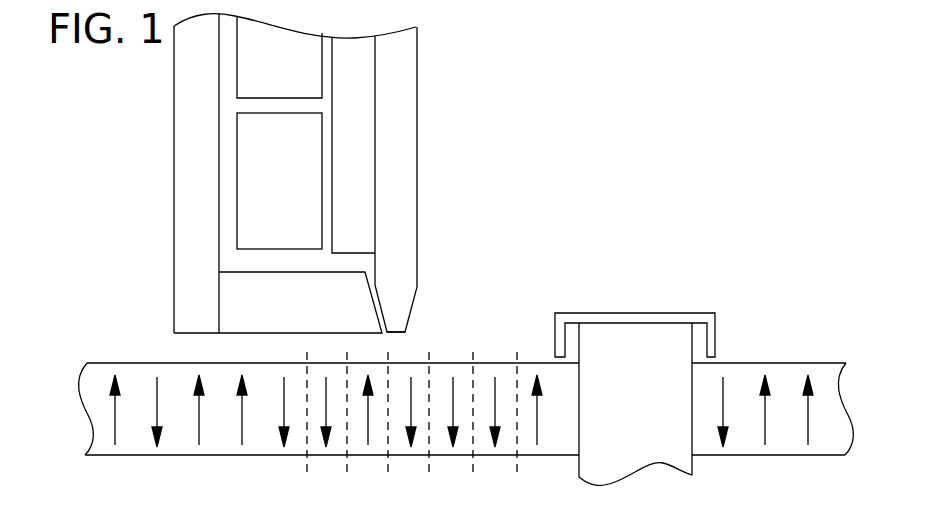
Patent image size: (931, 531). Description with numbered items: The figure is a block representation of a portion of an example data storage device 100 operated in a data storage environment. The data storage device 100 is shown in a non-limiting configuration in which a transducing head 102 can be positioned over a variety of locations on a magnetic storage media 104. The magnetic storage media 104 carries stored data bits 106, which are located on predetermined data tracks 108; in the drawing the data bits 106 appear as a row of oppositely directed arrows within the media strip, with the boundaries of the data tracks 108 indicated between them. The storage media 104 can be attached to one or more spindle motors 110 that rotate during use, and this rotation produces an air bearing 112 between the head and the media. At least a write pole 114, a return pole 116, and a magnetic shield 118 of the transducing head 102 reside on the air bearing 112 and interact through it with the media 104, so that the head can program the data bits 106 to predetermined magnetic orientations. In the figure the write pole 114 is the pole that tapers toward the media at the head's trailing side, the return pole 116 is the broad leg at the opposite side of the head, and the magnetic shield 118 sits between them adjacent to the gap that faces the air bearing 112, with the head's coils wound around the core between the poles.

The data storage device 100 is at (706, 78).
The transducing head 102 is at (442, 187).
The magnetic storage media 104 is at (102, 363).
The stored data bits 106 is at (284, 449).
The data tracks 108 is at (411, 478).
The spindle motor 110 is at (639, 290).
The air bearing 112 is at (405, 348).
The write pole 114 is at (412, 274).
The return pole 116 is at (213, 274).
The magnetic shield 118 is at (312, 310).